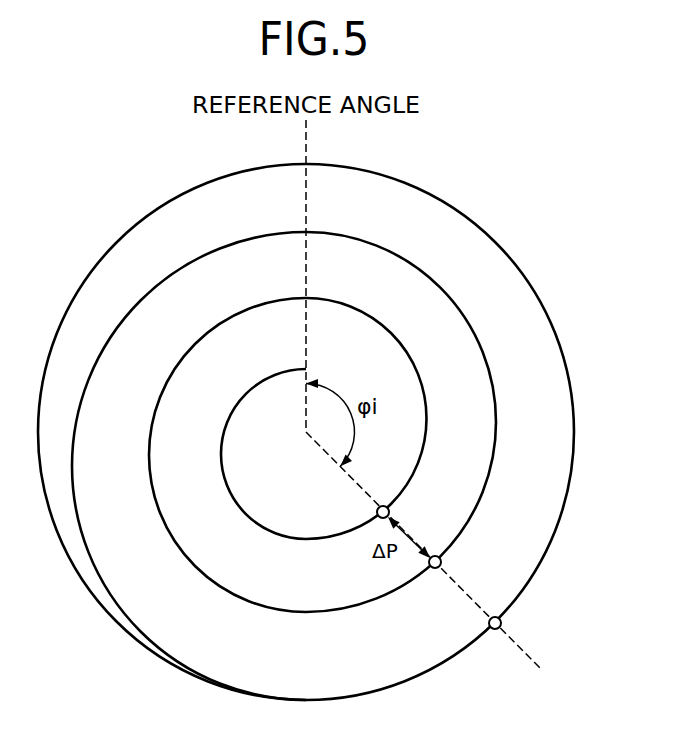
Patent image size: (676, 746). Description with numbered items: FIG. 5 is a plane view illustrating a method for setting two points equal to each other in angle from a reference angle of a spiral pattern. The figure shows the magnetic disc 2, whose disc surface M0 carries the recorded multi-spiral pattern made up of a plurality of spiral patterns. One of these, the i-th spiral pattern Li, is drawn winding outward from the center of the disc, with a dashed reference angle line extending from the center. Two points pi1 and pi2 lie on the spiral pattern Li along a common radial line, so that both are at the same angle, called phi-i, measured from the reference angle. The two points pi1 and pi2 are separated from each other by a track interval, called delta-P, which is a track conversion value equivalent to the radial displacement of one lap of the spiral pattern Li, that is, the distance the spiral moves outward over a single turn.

The magnetic disc 2 is at (440, 198).
The i-th spiral pattern Li is at (118, 314).
The disc surface M0 is at (514, 329).
The first point pi1 is at (437, 543).
The second point pi2 is at (383, 492).